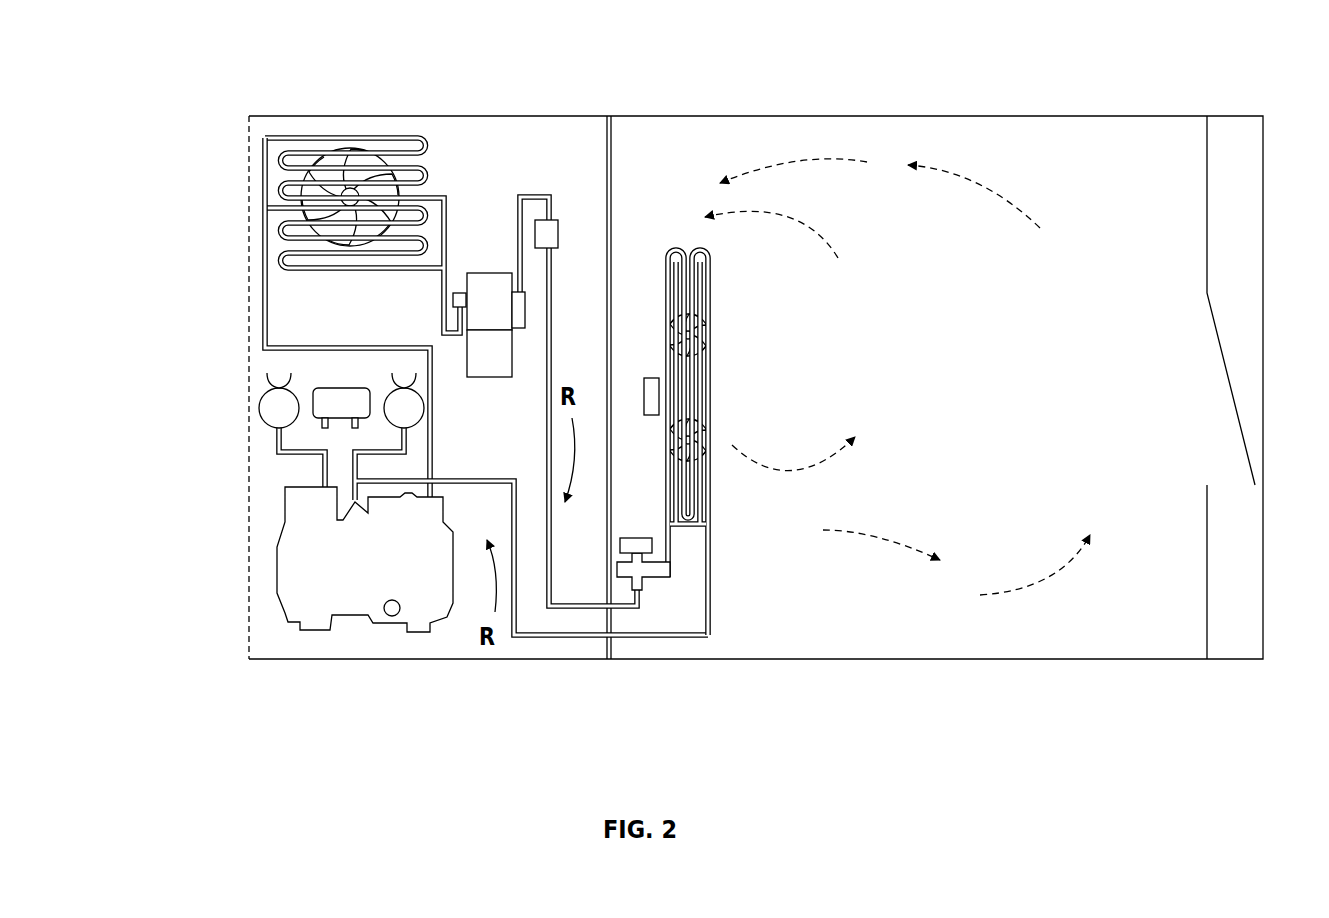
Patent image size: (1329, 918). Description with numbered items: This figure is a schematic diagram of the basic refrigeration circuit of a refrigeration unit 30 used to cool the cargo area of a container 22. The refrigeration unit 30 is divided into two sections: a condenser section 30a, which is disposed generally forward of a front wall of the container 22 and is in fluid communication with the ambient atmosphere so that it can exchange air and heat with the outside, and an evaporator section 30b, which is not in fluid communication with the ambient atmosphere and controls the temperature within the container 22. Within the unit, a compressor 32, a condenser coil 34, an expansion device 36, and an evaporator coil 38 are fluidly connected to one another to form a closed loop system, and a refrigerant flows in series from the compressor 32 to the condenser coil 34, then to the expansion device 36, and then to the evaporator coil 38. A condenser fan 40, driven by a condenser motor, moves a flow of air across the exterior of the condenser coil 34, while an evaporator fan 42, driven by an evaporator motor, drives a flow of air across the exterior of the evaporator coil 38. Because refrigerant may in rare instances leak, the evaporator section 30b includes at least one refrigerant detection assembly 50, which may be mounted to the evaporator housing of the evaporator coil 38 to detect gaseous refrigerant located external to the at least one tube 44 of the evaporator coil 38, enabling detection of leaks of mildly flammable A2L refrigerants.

The container 22 is at (1237, 108).
The refrigeration unit 30 is at (492, 143).
The condenser section 30a is at (297, 308).
The evaporator section 30b is at (952, 145).
The compressor 32 is at (303, 548).
The condenser coil 34 is at (400, 150).
The expansion device 36 is at (622, 577).
The evaporator coil 38 is at (692, 526).
The condenser fan 40 is at (323, 162).
The evaporator fan 42 is at (667, 343).
The tube 44 is at (697, 247).
The refrigerant detection assembly 50 is at (651, 415).